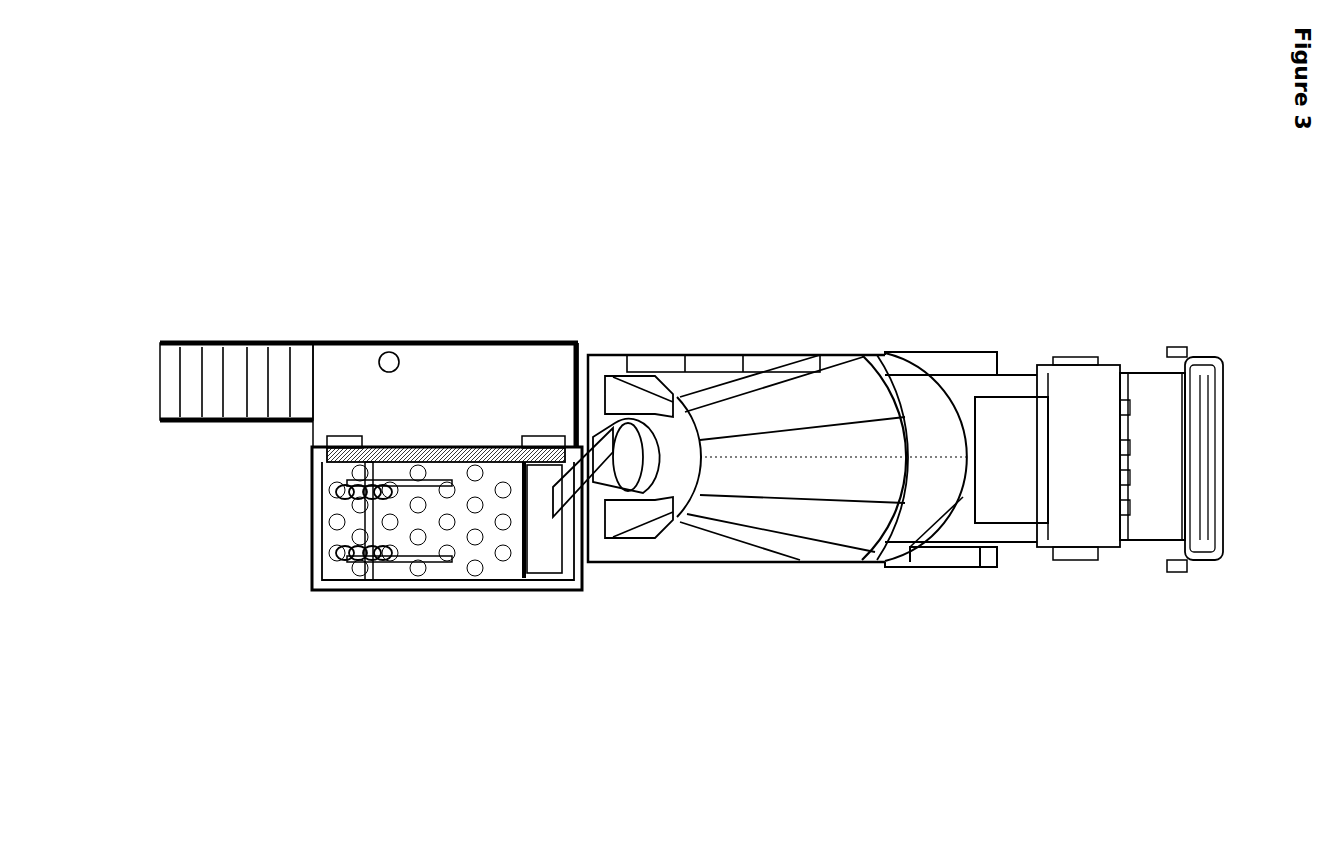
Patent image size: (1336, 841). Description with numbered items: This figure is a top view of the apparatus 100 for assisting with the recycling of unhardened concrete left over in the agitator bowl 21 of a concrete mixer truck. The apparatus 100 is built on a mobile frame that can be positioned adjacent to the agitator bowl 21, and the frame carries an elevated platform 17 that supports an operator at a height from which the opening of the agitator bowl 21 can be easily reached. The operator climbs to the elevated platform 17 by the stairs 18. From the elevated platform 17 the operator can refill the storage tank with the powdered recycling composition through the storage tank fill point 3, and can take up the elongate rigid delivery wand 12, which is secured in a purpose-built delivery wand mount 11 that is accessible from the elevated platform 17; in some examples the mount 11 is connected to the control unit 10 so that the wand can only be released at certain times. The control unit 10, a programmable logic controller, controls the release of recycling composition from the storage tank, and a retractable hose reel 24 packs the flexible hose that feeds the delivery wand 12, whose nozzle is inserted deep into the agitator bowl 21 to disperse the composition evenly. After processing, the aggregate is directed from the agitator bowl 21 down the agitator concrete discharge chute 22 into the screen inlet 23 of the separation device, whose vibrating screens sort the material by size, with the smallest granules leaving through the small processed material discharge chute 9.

The apparatus 100 is at (395, 630).
The stairs 18 is at (212, 338).
The storage tank fill point 3 is at (367, 340).
The delivery wand mount 11 is at (490, 340).
The delivery wand 12 is at (422, 462).
The operator elevated platform 17 is at (547, 340).
The control unit 10 is at (613, 358).
The retractable hose reel 24 is at (312, 455).
The small processed material discharge chute 9 is at (473, 553).
The screen/sieve concrete inlet 23 is at (543, 557).
The agitator concrete discharge chute 22 is at (595, 520).
The concrete agitator bowl 21 is at (802, 487).